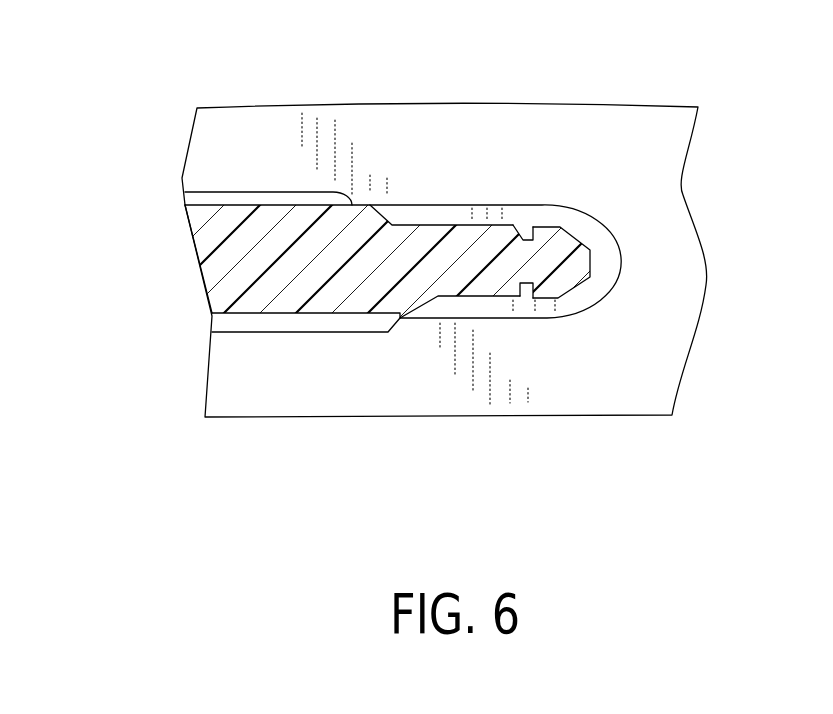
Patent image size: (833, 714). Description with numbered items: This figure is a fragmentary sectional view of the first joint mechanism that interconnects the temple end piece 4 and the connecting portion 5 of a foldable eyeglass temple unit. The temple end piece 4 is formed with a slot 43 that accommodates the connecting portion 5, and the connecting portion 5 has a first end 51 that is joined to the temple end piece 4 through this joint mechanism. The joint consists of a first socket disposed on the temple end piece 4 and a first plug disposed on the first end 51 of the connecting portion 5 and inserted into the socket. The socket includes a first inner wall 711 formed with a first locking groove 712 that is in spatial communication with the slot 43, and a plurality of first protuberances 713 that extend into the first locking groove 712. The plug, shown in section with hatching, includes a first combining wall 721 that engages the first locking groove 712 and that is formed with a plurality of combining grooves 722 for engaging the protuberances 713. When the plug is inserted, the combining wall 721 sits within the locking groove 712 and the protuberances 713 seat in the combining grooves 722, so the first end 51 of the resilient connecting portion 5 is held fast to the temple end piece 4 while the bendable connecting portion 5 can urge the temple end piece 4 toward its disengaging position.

The temple end piece 4 is at (577, 122).
The slot 43 is at (257, 191).
The connecting portion 5 is at (416, 338).
The first end 51 is at (416, 338).
The first inner wall 711 is at (590, 287).
The first locking groove 712 is at (405, 225).
The first protuberances 713 is at (520, 232).
The first combining wall 721 is at (436, 262).
The combining grooves 722 is at (560, 273).